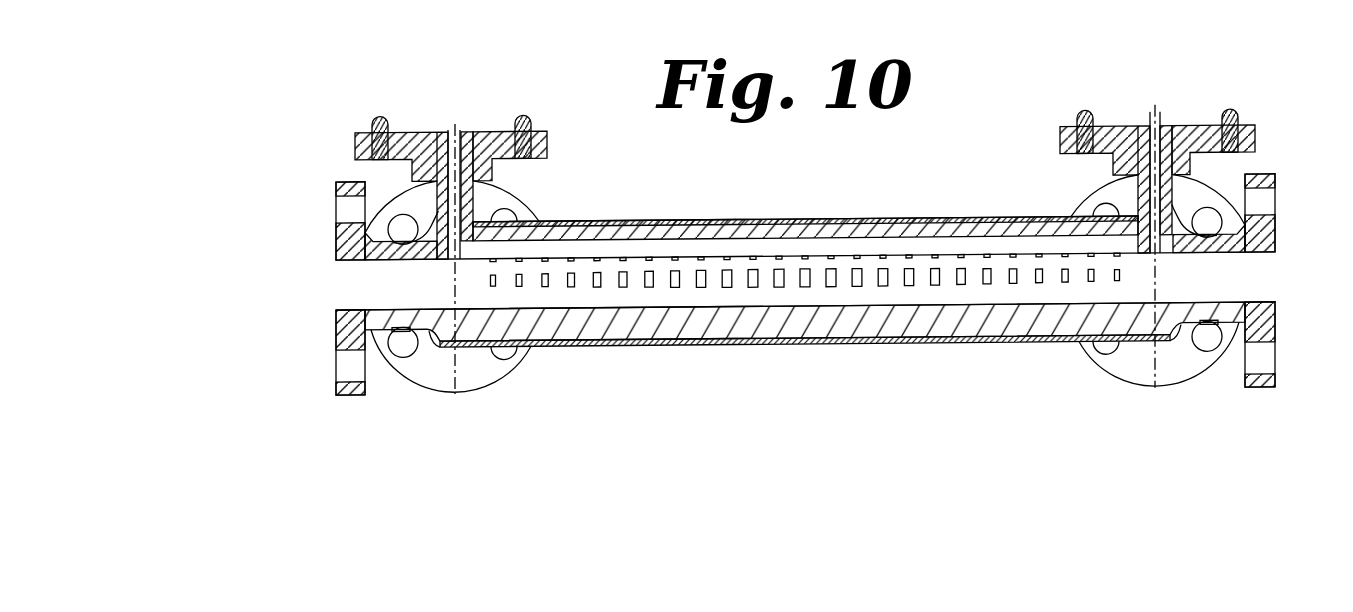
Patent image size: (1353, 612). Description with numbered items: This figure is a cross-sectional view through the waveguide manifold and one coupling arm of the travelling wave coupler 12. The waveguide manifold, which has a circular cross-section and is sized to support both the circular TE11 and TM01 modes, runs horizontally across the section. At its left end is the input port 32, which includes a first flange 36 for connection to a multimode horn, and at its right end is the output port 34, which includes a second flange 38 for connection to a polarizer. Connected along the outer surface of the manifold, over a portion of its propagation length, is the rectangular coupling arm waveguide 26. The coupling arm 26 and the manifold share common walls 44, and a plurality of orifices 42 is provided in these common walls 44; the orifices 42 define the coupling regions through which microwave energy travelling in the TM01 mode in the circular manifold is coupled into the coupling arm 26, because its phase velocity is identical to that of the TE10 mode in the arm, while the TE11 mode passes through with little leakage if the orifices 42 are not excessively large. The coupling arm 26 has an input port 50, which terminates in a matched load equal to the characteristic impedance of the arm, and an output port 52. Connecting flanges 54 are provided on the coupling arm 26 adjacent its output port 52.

The travelling wave coupler 12 is at (784, 473).
The coupling arm waveguide 26 is at (799, 219).
The input port 32 is at (334, 284).
The output port 34 is at (1278, 275).
The first flange 36 is at (350, 397).
The second flange 38 is at (1267, 389).
The orifices 42 is at (805, 327).
The common walls 44 is at (591, 289).
The input port 50 is at (456, 128).
The output port 52 is at (1156, 114).
The connecting flanges 54 is at (549, 138).